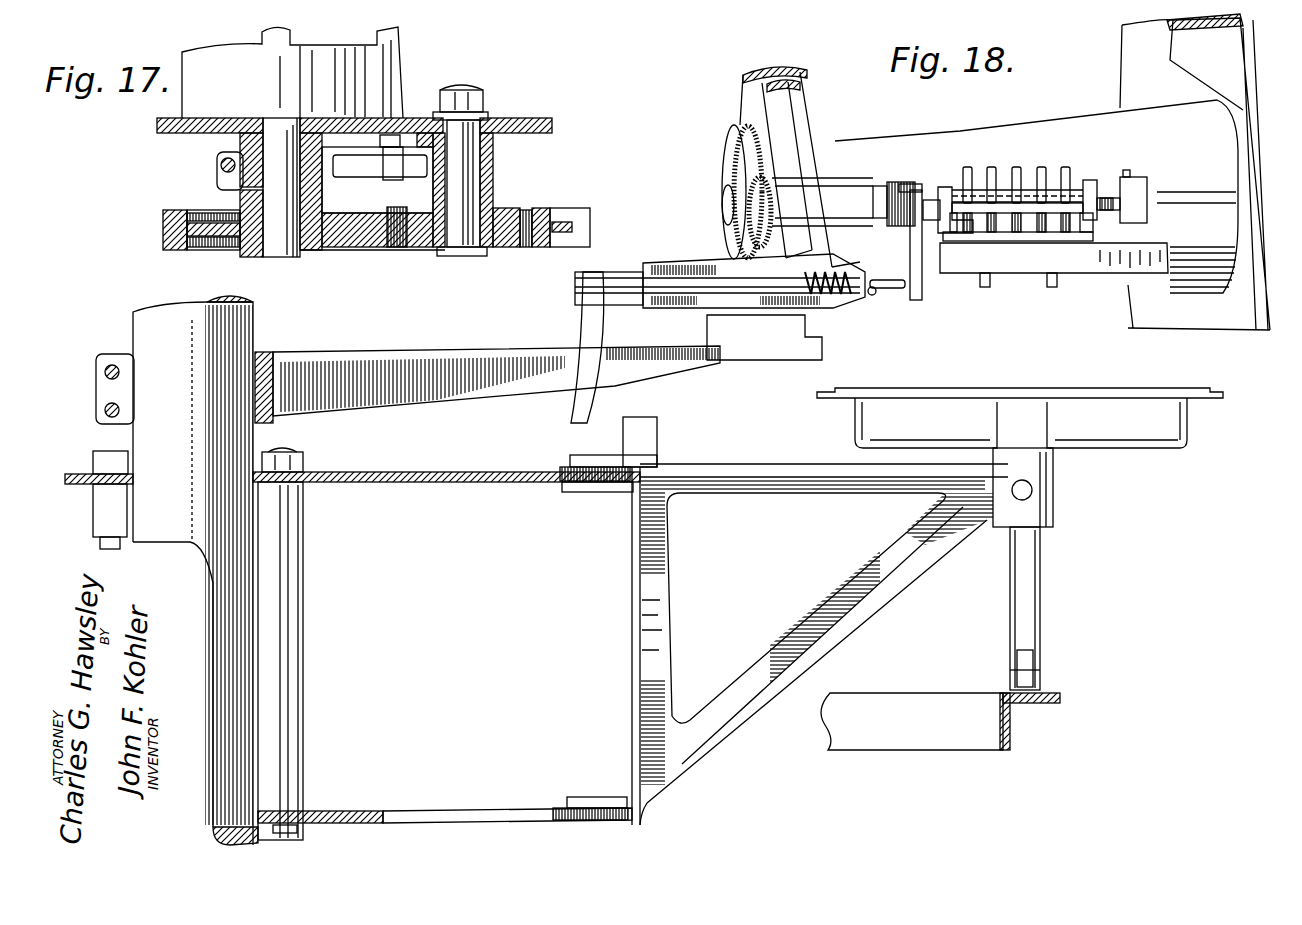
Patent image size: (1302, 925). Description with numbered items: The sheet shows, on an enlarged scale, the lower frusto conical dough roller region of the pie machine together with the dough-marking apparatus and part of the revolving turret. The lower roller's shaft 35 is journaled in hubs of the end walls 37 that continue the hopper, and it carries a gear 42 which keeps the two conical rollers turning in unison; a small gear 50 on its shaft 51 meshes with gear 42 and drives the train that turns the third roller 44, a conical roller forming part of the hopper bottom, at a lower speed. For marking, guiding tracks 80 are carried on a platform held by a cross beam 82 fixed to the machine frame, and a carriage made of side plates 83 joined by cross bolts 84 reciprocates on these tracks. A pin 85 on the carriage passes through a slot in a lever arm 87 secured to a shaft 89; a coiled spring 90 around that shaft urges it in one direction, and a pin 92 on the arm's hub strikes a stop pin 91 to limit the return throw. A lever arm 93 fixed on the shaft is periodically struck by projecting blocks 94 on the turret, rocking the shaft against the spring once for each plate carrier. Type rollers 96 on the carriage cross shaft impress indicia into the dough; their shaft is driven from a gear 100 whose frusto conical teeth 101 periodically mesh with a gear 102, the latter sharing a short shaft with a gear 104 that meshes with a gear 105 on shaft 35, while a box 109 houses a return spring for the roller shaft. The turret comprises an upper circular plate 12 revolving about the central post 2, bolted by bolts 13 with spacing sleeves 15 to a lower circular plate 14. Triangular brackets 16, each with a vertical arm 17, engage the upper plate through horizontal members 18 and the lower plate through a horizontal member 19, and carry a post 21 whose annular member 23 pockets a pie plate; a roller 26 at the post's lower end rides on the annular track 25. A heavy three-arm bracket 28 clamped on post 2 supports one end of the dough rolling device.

In FIG. 17, the third roller 44 is at (292, 72).
In FIG. 17, the shaft 35 is at (283, 258).
In FIG. 17, the gear 42 is at (362, 240).
In FIG. 17, the gear 50 is at (421, 248).
In FIG. 17, the shaft 51 is at (434, 190).
In FIG. 18, the end walls 37 is at (824, 142).
In FIG. 18, the gear 105 is at (732, 148).
In FIG. 18, the gear 104 is at (752, 228).
In FIG. 18, the gear 102 is at (893, 185).
In FIG. 18, the frusto conical teeth 101 is at (900, 185).
In FIG. 18, the lever arm 87 is at (918, 292).
In FIG. 18, the pin 85 is at (943, 187).
In FIG. 18, the gear 100 is at (975, 158).
In FIG. 18, the type rollers 96 is at (1062, 172).
In FIG. 18, the cross bolts 84 is at (1003, 212).
In FIG. 18, the side plates 83 is at (1090, 180).
In FIG. 18, the box 109 is at (1135, 187).
In FIG. 18, the guiding tracks 80 is at (1073, 243).
In FIG. 18, the shaft 89 is at (675, 292).
In FIG. 18, the coiled spring 90 is at (843, 298).
In FIG. 18, the pin 91 is at (890, 290).
In FIG. 18, the pin 92 is at (873, 295).
In FIG. 18, the cross beam 82 is at (767, 328).
In FIG. 18, the lever arm 93 is at (583, 333).
In FIG. 18, the central post 2 is at (258, 340).
In FIG. 18, the three-arm bracket 28 is at (405, 352).
In FIG. 18, the circular plate 12 is at (368, 483).
In FIG. 18, the bolts 13 is at (290, 452).
In FIG. 18, the sleeves 15 is at (308, 612).
In FIG. 18, the lower circular plate 14 is at (448, 811).
In FIG. 18, the horizontal member 19 is at (583, 797).
In FIG. 18, the horizontal members 18 is at (590, 456).
In FIG. 18, the projecting blocks 94 is at (661, 442).
In FIG. 18, the triangular brackets 16 is at (770, 465).
In FIG. 18, the vertical arm 17 is at (626, 662).
In FIG. 18, the annular member 23 is at (905, 400).
In FIG. 18, the post 21 is at (1010, 580).
In FIG. 18, the roller 26 is at (1017, 670).
In FIG. 18, the track 25 is at (940, 721).